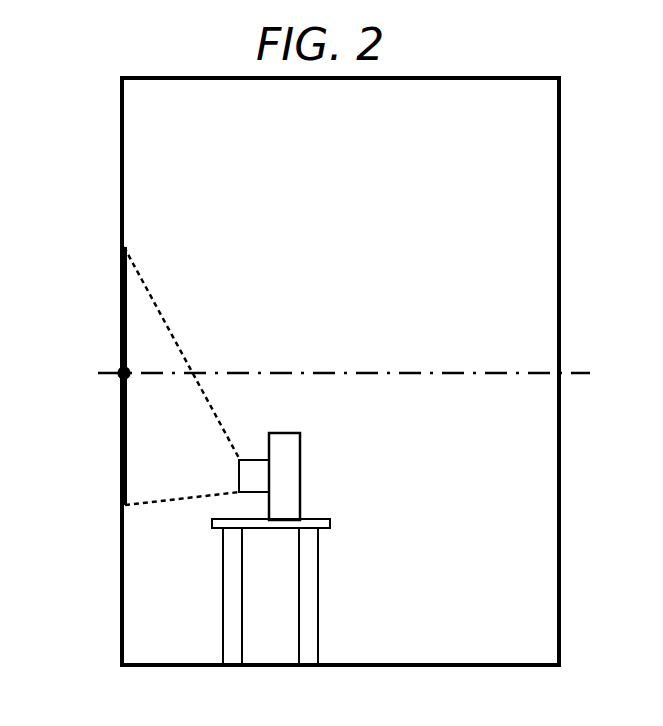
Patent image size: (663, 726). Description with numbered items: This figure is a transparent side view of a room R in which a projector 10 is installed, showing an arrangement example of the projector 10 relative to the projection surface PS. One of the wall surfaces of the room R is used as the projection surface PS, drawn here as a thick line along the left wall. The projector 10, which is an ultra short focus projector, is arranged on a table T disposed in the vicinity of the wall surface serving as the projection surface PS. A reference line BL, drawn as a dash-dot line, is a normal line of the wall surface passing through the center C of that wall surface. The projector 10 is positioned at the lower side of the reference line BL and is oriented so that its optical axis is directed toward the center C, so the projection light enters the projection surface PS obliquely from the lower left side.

The room R is at (94, 110).
The projection surface PS is at (125, 180).
The reference line BL is at (488, 373).
The center C is at (128, 378).
The projector 10 is at (300, 475).
The table T is at (330, 520).